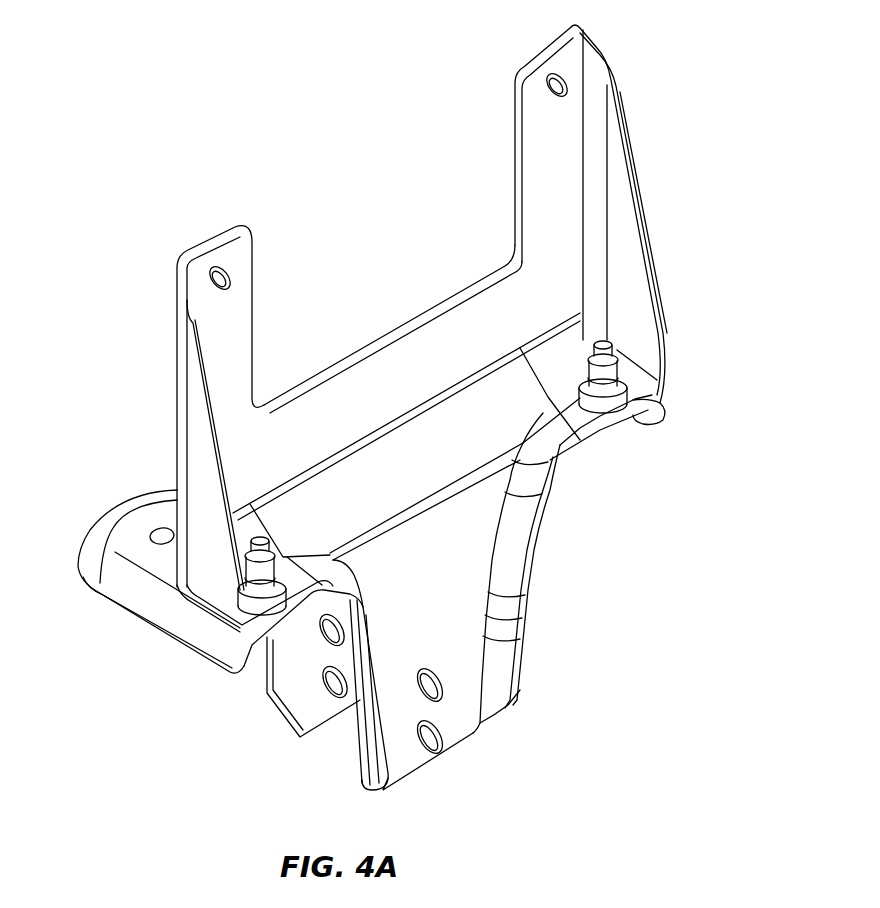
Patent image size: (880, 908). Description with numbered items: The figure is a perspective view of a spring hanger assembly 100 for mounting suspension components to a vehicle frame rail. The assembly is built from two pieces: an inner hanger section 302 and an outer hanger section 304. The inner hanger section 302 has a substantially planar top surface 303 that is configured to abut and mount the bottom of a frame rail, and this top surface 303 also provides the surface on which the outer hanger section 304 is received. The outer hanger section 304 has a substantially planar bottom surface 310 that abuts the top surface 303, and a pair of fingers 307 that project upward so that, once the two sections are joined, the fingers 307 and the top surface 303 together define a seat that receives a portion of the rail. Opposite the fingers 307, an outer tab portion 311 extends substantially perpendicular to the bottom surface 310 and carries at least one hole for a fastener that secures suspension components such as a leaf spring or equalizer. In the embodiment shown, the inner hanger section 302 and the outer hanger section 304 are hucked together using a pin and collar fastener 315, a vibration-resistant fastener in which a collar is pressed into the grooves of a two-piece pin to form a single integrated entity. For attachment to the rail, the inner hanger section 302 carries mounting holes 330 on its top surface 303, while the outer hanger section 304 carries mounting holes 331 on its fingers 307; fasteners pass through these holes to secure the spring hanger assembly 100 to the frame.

The spring hanger assembly 100 is at (375, 218).
The fingers 307 is at (242, 257).
The mounting holes 331 is at (566, 88).
The planar top surface 303 is at (153, 515).
The mounting holes 330 is at (92, 585).
The inner hanger section 302 is at (133, 605).
The pin and collar fastener 315 is at (607, 440).
The outer hanger section 304 is at (546, 495).
The bottom surface 310 is at (297, 697).
The outer tab portion 311 is at (466, 697).